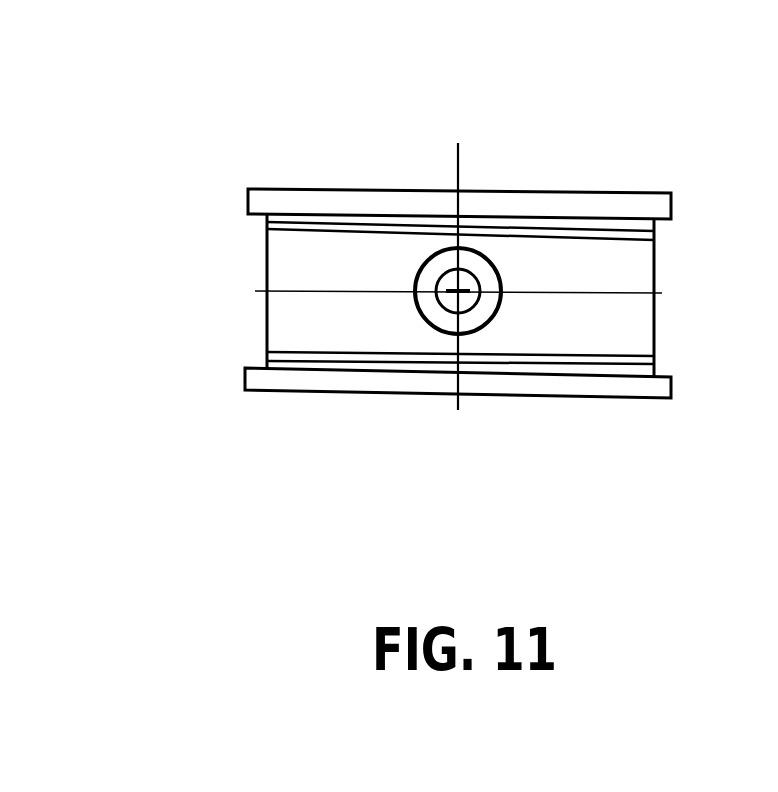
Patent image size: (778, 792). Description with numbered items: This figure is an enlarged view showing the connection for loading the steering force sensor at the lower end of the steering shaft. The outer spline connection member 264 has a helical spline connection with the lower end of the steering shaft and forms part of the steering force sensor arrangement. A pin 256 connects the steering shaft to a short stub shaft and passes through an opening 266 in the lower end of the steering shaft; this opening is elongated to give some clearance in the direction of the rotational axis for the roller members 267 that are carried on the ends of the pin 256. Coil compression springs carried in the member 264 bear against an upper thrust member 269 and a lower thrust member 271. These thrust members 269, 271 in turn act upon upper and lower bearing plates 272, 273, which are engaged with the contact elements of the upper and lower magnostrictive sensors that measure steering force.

The pin 256 is at (500, 322).
The outer spline connection member 264 is at (267, 312).
The opening 266 is at (471, 257).
The roller members 267 is at (437, 325).
The upper thrust member 269 is at (267, 226).
The lower thrust member 271 is at (267, 358).
The bearing plate 272 is at (366, 189).
The bearing plate 273 is at (315, 392).